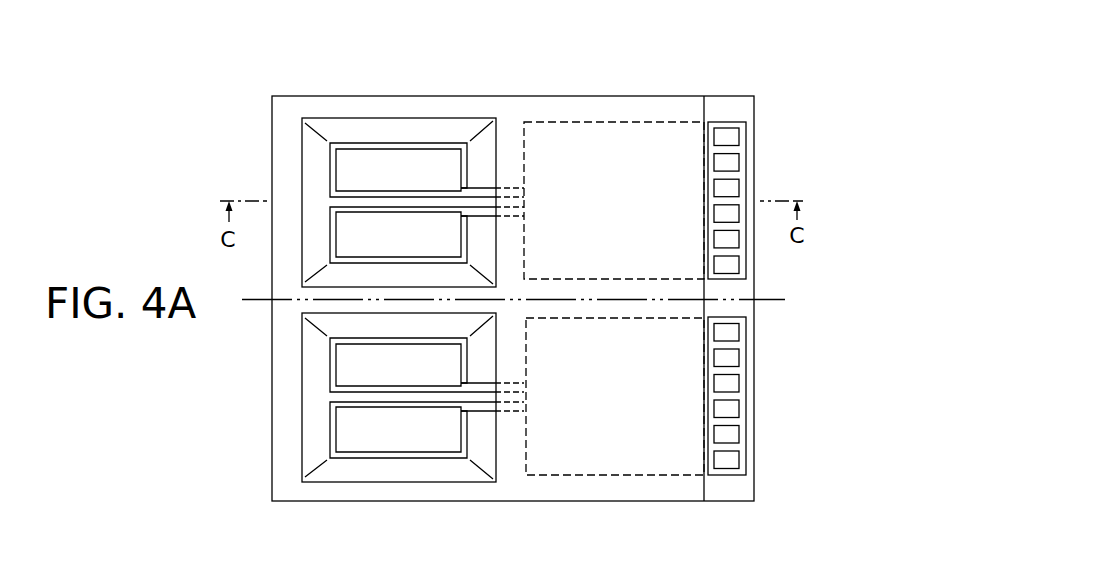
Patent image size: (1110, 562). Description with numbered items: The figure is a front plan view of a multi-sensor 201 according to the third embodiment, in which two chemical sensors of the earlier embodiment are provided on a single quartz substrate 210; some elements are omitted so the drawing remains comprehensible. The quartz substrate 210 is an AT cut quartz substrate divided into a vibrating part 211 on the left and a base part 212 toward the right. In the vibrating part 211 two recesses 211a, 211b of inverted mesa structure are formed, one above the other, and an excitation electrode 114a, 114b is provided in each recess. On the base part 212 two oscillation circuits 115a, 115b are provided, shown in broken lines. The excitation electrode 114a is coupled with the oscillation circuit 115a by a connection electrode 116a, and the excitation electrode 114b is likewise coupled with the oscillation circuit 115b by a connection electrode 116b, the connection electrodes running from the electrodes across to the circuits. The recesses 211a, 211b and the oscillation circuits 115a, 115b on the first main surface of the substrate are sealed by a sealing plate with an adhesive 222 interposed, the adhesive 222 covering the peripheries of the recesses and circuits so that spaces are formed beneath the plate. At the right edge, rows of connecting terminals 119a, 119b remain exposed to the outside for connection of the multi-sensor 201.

The multi-sensor 201 is at (539, 82).
The quartz substrate 210 is at (733, 91).
The vibrating part 211 is at (328, 96).
The recess 211a is at (405, 205).
The recess 211b is at (399, 432).
The base part 212 is at (671, 96).
The adhesive 222 is at (656, 488).
The excitation electrode 114a is at (354, 230).
The excitation electrode 114b is at (327, 398).
The connection electrode 116a is at (487, 213).
The connection electrode 116b is at (490, 465).
The oscillation circuit 115a is at (608, 147).
The oscillation circuit 115b is at (585, 440).
The connecting terminal 119a is at (727, 134).
The connecting terminal 119b is at (727, 332).